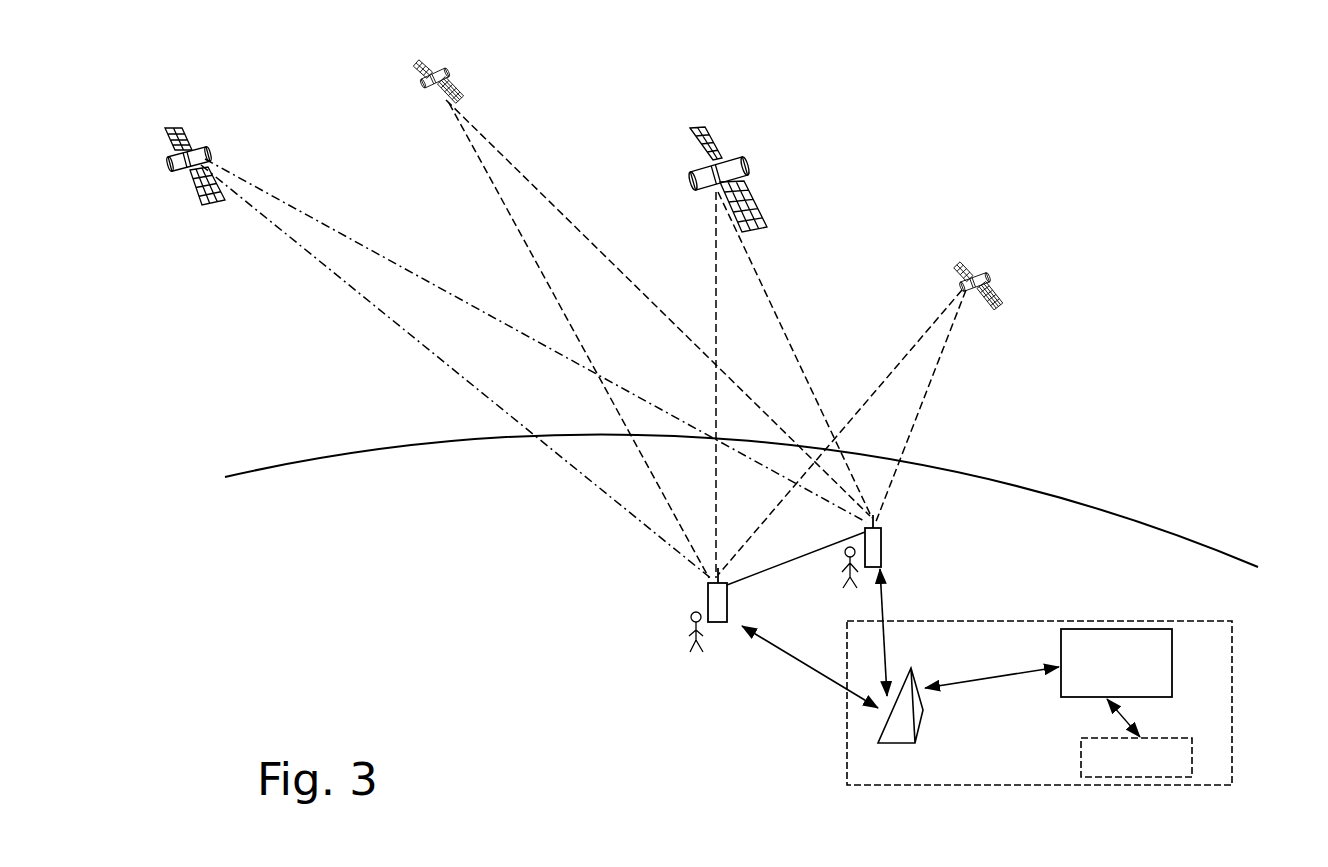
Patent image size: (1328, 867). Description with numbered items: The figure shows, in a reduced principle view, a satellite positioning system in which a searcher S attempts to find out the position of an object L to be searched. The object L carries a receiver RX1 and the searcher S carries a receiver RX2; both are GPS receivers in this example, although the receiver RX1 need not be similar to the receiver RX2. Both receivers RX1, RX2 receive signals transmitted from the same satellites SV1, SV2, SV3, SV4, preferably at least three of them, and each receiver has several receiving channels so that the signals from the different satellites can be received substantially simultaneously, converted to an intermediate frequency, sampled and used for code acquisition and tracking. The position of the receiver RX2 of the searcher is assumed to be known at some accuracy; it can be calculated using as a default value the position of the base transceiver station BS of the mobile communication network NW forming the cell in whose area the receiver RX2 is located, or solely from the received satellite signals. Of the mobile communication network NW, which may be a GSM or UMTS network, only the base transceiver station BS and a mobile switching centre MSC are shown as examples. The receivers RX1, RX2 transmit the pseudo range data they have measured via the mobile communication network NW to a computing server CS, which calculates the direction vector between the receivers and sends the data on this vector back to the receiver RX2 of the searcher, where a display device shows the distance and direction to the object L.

The satellite SV1 is at (489, 335).
The satellite SV2 is at (634, 300).
The satellite SV3 is at (779, 331).
The satellite SV4 is at (868, 393).
The receiver RX1 is at (708, 597).
The receiver RX2 is at (881, 542).
The object to be searched L is at (690, 645).
The searcher S is at (843, 575).
The mobile communication network NW is at (1028, 621).
The mobile switching centre MSC is at (1116, 663).
The base transceiver station BS is at (918, 717).
The computing server CS is at (1192, 742).